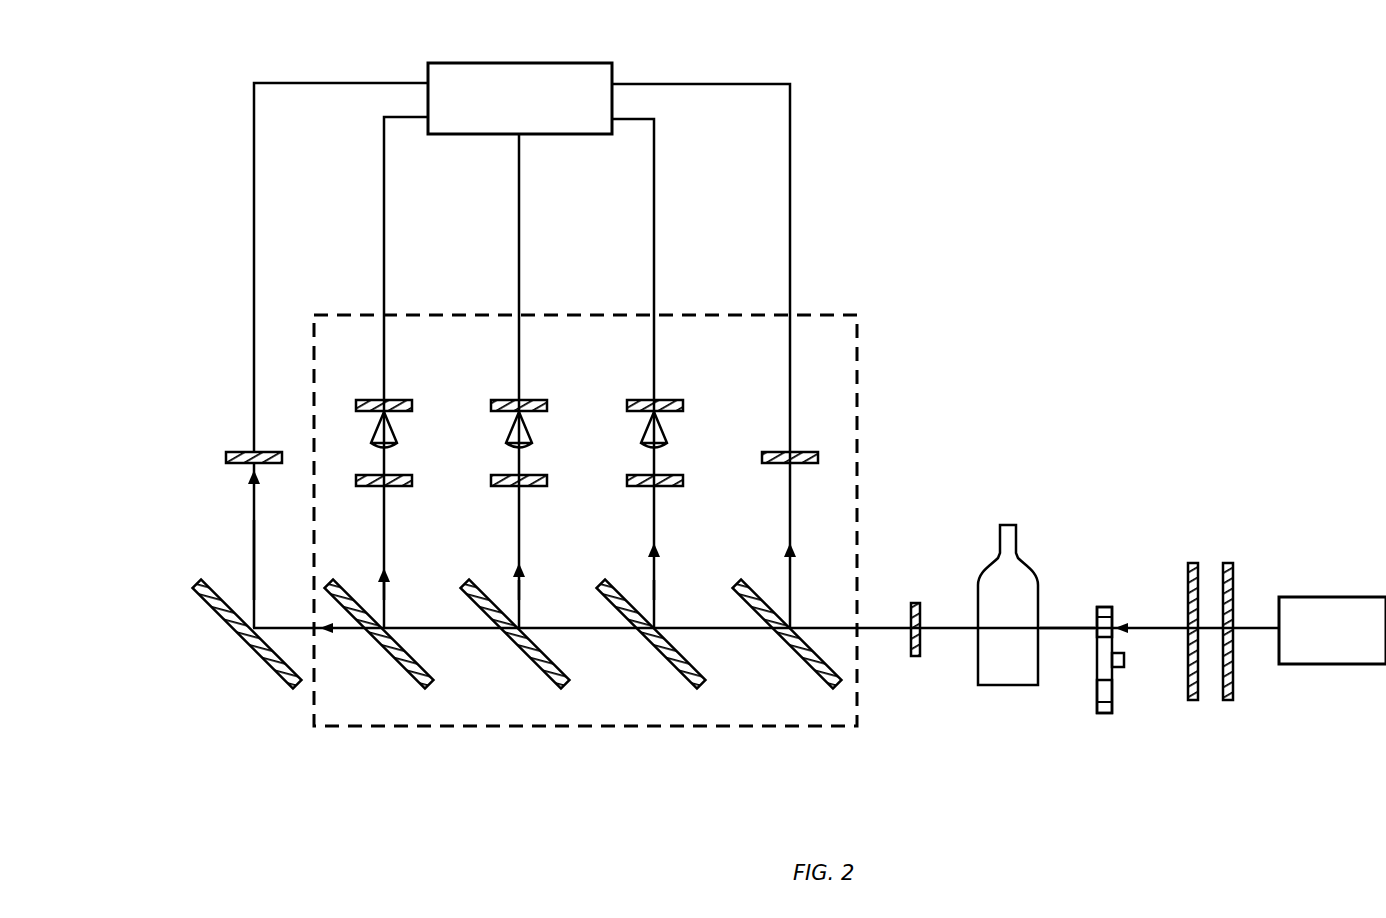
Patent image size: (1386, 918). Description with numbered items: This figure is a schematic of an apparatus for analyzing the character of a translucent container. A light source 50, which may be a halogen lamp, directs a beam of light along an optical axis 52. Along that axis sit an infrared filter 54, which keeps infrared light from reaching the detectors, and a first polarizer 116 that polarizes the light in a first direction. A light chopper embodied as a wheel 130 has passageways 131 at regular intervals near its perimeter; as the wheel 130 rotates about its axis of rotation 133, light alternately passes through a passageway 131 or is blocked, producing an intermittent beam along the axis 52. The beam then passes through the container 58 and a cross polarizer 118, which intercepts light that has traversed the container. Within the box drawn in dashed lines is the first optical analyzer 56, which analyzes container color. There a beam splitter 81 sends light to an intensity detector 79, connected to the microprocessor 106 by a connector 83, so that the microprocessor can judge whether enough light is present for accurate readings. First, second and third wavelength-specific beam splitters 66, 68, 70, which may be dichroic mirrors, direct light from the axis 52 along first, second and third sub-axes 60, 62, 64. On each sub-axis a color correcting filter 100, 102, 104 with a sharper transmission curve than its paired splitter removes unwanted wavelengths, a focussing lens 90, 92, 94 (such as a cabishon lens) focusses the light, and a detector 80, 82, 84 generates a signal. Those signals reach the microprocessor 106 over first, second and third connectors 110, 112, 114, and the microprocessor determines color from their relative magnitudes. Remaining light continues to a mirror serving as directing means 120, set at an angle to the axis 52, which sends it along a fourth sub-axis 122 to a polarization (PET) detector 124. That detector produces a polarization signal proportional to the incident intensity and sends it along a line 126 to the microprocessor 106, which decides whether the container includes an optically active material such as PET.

The light source 50 is at (1340, 596).
The optical axis 52 is at (1069, 627).
The infrared filter 54 is at (1228, 562).
The first optical analyzer 56 is at (588, 727).
The container 58 is at (1009, 524).
The first sub-axis 60 is at (656, 590).
The second sub-axis 62 is at (521, 590).
The third sub-axis 64 is at (386, 590).
The first wavelength-specific beam splitter 66 is at (702, 685).
The second wavelength-specific beam splitter 68 is at (566, 685).
The third wavelength-specific beam splitter 70 is at (430, 685).
The intensity detector 79 is at (806, 451).
The first detector 80 is at (645, 398).
The beam splitter 81 is at (838, 685).
The second detector 82 is at (511, 398).
The connector 83 is at (790, 193).
The third detector 84 is at (377, 398).
The first focussing lens 90 is at (667, 437).
The second focussing lens 92 is at (532, 437).
The third focussing lens 94 is at (397, 437).
The first color correcting filter 100 is at (669, 486).
The second color correcting filter 102 is at (533, 486).
The third color correcting filter 104 is at (398, 486).
The microprocessor 106 is at (516, 62).
The first connector 110 is at (655, 238).
The second connector 112 is at (519, 248).
The third connector 114 is at (384, 215).
The first polarizer 116 is at (1192, 700).
The cross polarizer 118 is at (914, 602).
The directing means 120 is at (280, 676).
The fourth sub-axis 122 is at (253, 500).
The polarization (PET) detector 124 is at (238, 451).
The line 126 is at (254, 200).
The wheel 130 is at (1105, 713).
The passageways 131 is at (1114, 615).
The axis of rotation 133 is at (1126, 667).